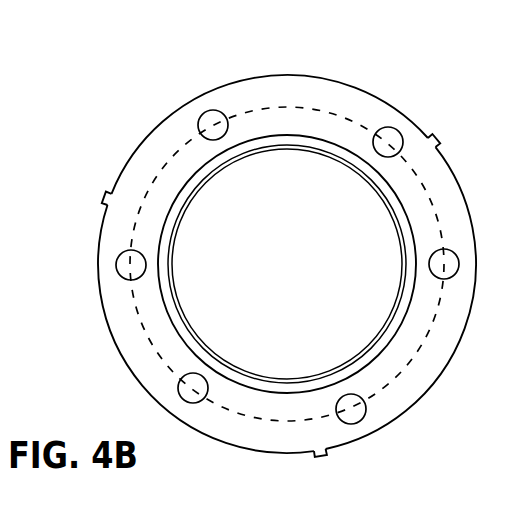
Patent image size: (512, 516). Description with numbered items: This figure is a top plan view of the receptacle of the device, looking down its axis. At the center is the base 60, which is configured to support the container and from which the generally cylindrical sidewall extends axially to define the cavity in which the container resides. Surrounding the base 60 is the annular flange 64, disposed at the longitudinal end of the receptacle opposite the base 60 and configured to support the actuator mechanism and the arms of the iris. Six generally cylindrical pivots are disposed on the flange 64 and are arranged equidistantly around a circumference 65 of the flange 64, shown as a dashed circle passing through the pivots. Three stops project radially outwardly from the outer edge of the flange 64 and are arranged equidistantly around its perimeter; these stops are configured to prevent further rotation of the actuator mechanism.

The base 60 is at (323, 220).
The flange 64 is at (99, 283).
The circumference 65 is at (172, 160).